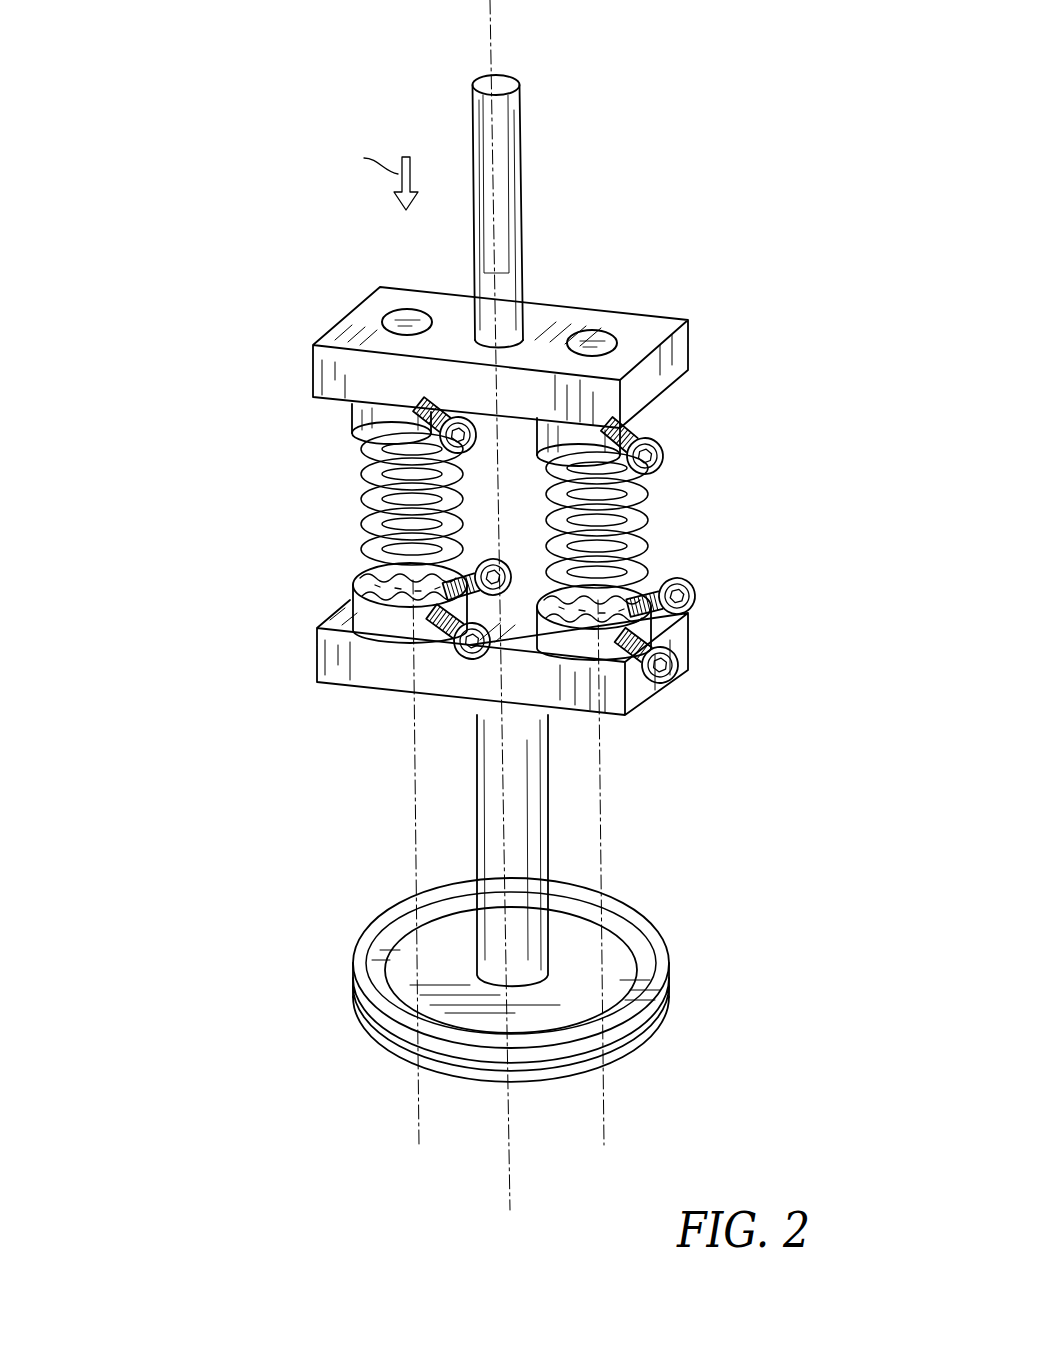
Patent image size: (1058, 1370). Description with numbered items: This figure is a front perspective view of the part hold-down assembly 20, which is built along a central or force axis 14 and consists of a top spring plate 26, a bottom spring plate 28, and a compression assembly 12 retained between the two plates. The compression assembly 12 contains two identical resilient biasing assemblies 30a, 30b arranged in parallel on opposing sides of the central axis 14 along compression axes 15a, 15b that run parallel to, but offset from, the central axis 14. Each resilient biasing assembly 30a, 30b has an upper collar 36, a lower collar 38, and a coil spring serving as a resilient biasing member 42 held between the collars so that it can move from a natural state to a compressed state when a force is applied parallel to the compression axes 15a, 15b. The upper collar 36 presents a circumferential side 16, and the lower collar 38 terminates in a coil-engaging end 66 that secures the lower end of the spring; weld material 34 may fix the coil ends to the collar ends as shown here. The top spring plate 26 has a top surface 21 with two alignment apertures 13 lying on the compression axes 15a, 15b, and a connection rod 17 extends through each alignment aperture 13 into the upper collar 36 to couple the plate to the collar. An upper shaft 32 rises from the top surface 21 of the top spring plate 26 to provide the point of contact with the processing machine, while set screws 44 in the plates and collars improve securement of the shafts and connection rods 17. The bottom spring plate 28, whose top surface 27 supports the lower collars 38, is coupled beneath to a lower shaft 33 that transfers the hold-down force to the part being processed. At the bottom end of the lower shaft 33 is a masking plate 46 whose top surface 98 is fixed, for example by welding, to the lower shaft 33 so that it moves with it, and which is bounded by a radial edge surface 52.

The part hold-down assembly 20 is at (195, 158).
The central axis 14 is at (497, 40).
The upper shaft 32 is at (518, 185).
The top surface 21 is at (452, 307).
The top spring plate 26 is at (358, 362).
The connection rod 17 is at (404, 296).
The alignment aperture 13 is at (400, 294).
The compression assembly 12 is at (822, 400).
The resilient biasing assembly 30a is at (305, 487).
The resilient biasing assembly 30b is at (762, 483).
The circumferential side 16 is at (393, 412).
The upper collar 36 is at (362, 420).
The resilient biasing member 42 is at (362, 497).
The coil-engaging end 66 is at (367, 570).
The lower shaft 33 is at (367, 608).
The weld material 34 is at (397, 600).
The set screws 44 is at (470, 455).
The top surface 27 is at (330, 613).
The bottom spring plate 28 is at (342, 672).
The lower collar 38 is at (650, 632).
The compression axis 15a is at (413, 800).
The compression axis 15b is at (601, 770).
The masking plate 46 is at (543, 1015).
The top surface 98 is at (550, 985).
The radial edge surface 52 is at (574, 1054).